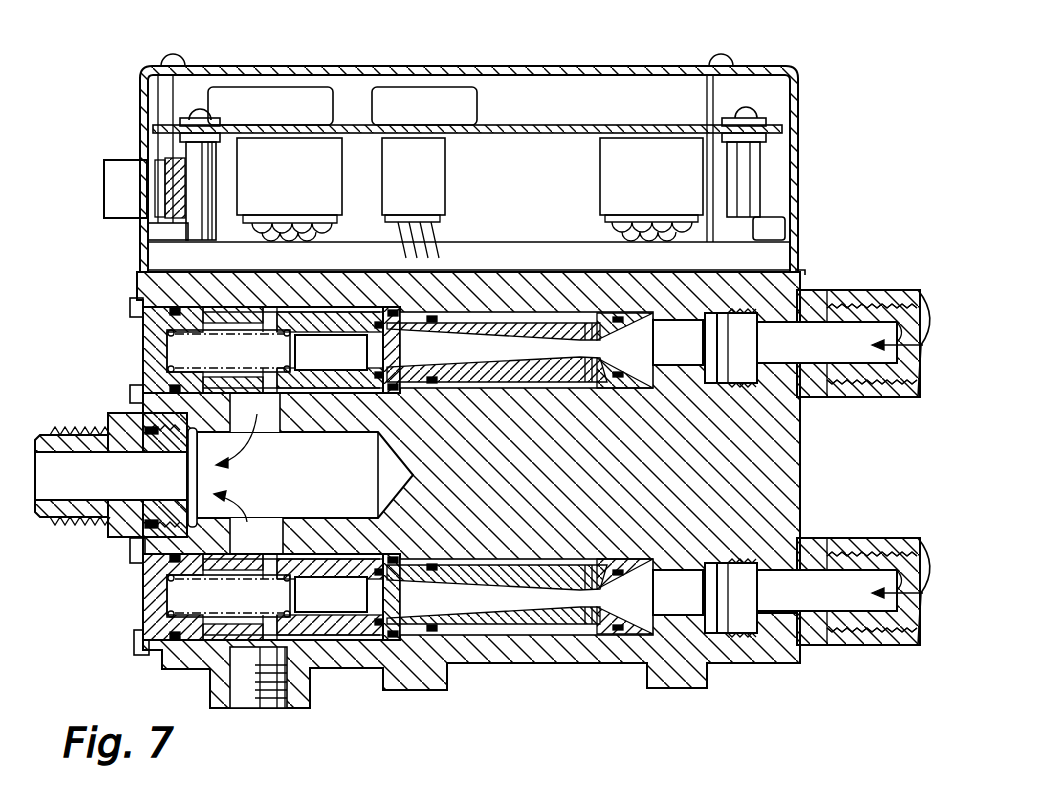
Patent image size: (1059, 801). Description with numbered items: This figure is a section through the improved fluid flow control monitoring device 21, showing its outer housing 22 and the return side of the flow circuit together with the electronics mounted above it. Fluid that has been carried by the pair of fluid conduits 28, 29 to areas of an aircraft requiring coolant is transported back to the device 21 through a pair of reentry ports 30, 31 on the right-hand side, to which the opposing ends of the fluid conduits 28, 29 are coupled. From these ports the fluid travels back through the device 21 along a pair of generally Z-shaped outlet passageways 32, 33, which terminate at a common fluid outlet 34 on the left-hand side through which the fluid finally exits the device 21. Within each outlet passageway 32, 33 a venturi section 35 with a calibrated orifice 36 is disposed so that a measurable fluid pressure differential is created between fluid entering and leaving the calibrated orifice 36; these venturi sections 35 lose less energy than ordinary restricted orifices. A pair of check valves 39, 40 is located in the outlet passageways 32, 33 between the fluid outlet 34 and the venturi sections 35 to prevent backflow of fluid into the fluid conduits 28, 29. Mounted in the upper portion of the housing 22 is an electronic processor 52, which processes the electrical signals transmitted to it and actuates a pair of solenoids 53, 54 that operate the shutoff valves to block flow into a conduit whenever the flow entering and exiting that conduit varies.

The fluid flow control monitoring device 21 is at (556, 64).
The outer housing 22 is at (803, 487).
The fluid conduit 28 is at (868, 647).
The fluid conduit 29 is at (882, 393).
The reentry port 30 is at (897, 580).
The reentry port 31 is at (892, 330).
The outlet passageway 32 is at (691, 608).
The outlet passageway 33 is at (685, 351).
The fluid outlet 34 is at (50, 487).
The venturi section 35 is at (426, 361).
The calibrated orifice 36 is at (590, 350).
The check valve 39 is at (369, 595).
The check valve 40 is at (366, 342).
The electronic processor 52 is at (520, 122).
The solenoid 53 is at (418, 117).
The solenoid 54 is at (283, 117).